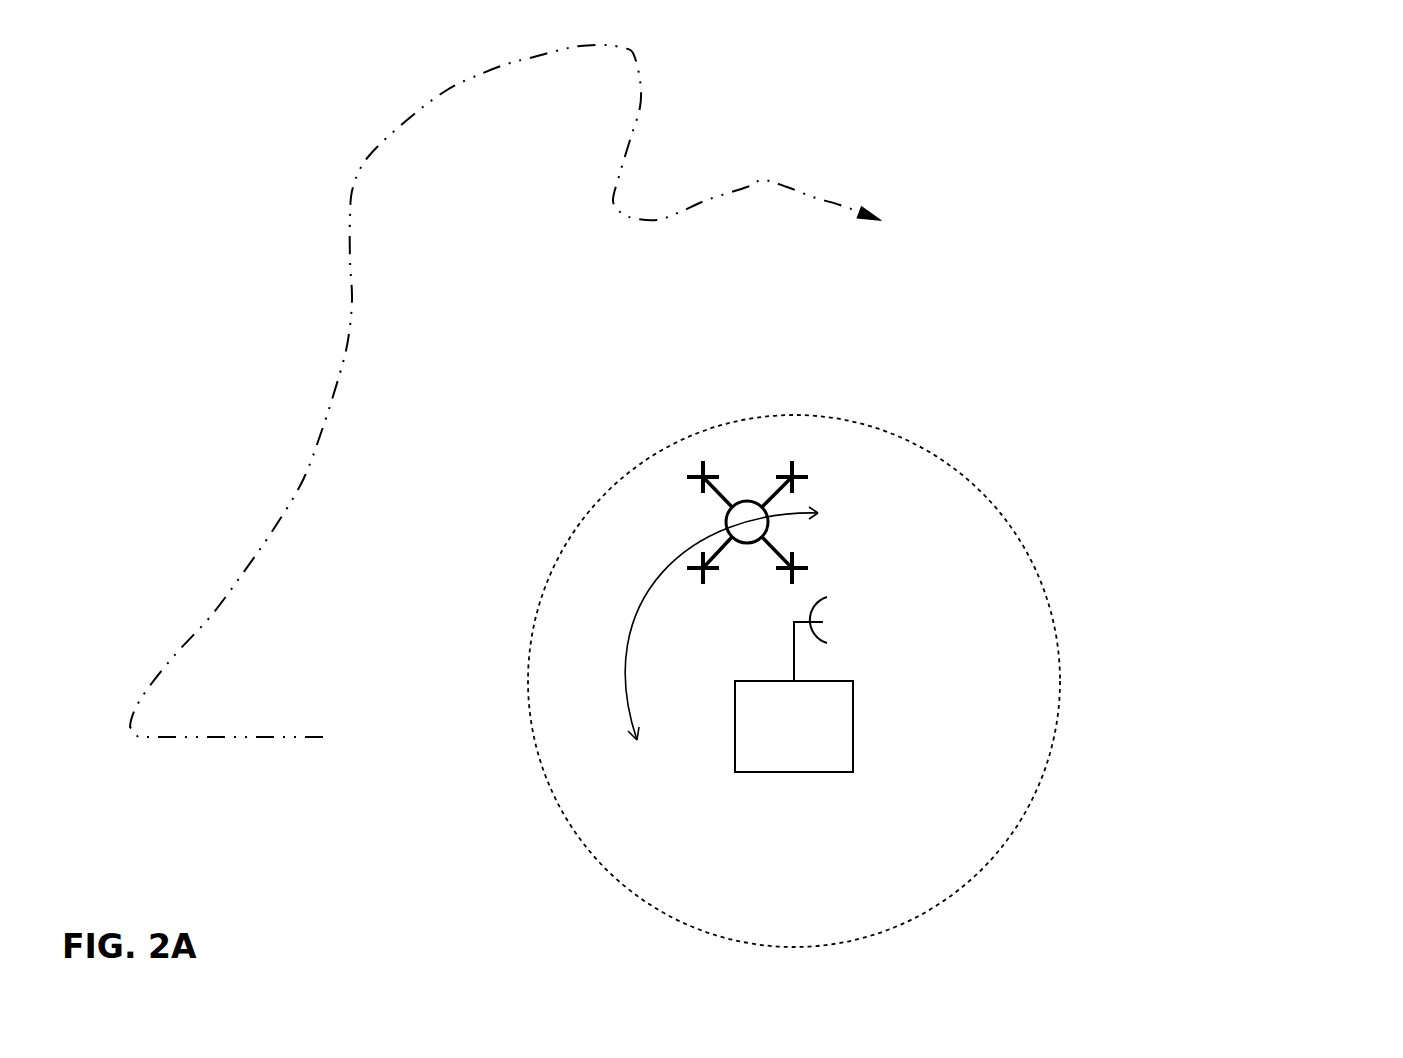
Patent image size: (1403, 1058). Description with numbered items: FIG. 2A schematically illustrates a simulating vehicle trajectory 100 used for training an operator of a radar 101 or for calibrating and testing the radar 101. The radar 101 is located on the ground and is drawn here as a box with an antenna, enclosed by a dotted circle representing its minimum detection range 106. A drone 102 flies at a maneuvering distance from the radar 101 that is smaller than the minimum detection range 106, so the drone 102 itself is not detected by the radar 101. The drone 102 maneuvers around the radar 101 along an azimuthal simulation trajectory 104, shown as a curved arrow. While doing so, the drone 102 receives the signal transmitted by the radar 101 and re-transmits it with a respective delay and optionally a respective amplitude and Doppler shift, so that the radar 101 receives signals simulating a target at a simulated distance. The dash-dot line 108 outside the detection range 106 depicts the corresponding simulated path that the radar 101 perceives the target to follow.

The simulating vehicle trajectory 100 is at (1147, 263).
The radar 101 is at (735, 727).
The drone 102 is at (727, 525).
The azimuthal simulation trajectory 104 is at (627, 670).
The minimum detection range 106 is at (533, 633).
The flight path of other aircraft 108 is at (353, 277).